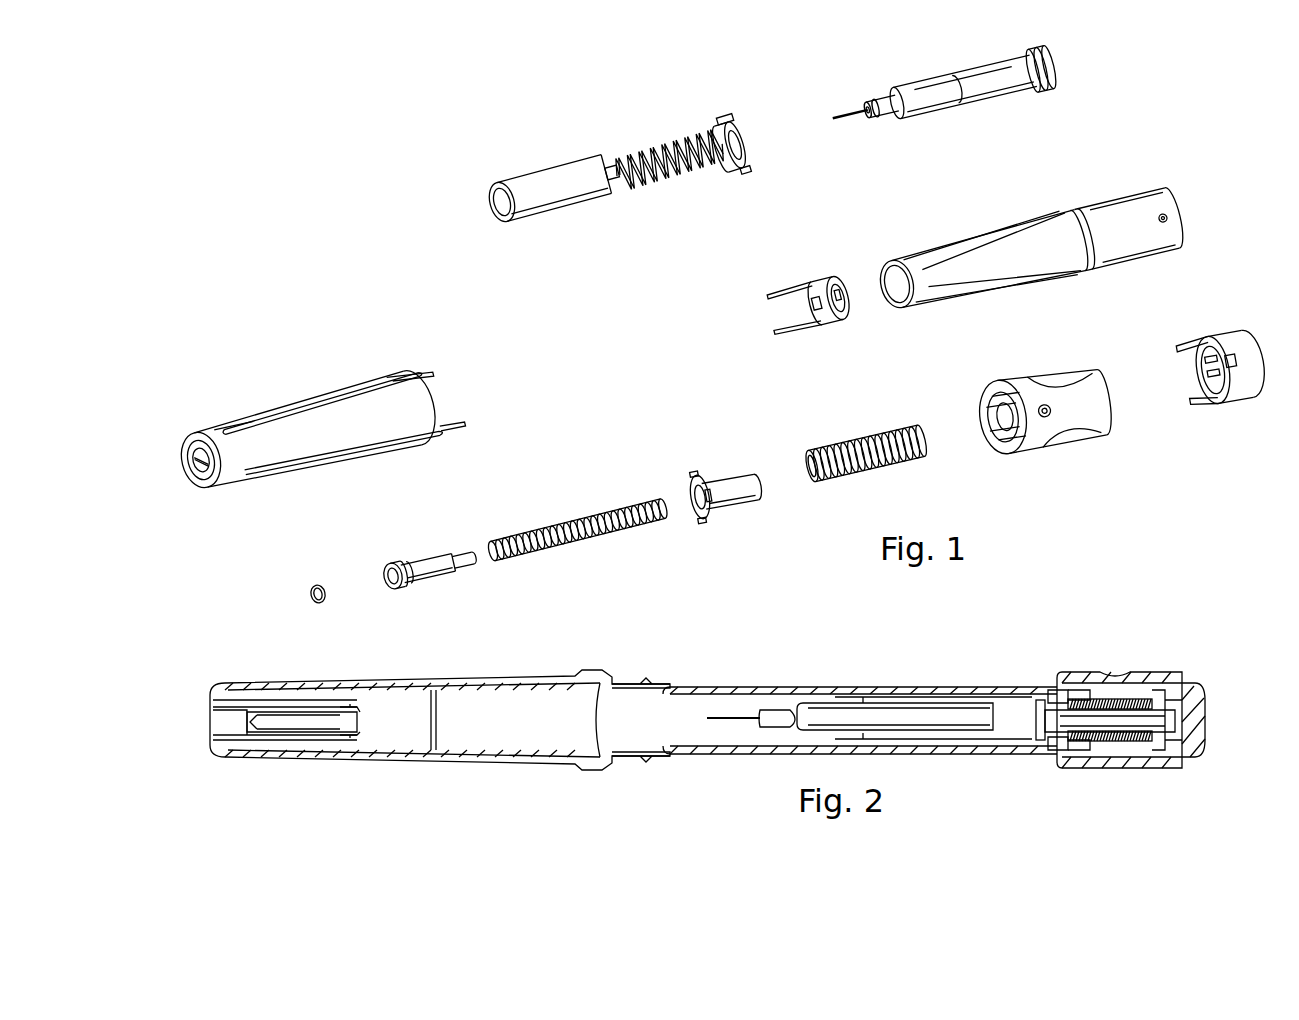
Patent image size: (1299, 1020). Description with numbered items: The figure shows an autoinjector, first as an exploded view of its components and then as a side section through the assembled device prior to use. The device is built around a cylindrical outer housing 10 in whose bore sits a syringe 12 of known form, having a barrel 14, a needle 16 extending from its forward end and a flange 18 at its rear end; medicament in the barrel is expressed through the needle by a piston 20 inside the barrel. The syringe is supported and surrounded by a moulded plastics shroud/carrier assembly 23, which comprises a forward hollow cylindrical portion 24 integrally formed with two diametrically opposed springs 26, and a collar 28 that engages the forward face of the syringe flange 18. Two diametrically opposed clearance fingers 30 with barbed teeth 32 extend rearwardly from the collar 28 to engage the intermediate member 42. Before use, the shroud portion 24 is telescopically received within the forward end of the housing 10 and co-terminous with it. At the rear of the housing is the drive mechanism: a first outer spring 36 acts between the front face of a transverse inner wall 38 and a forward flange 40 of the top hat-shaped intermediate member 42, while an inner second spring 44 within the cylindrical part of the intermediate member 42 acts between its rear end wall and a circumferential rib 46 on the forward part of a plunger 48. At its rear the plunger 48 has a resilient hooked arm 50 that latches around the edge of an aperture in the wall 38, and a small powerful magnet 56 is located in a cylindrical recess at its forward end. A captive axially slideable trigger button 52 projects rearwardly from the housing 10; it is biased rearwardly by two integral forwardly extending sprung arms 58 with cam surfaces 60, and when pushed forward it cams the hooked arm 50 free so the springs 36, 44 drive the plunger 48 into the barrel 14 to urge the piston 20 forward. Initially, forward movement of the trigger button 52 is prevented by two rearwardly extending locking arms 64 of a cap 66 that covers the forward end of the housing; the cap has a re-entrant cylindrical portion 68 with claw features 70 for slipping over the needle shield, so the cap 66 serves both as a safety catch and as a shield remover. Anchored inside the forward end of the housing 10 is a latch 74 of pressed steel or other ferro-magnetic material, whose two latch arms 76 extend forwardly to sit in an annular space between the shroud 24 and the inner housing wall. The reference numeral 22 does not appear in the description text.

In FIG. 1, the outer housing 10 is at (1052, 268).
In FIG. 2, the outer housing 10 is at (860, 720).
In FIG. 1, the syringe 12 is at (962, 92).
In FIG. 1, the barrel 14 is at (975, 85).
In FIG. 1, the needle 16 is at (853, 120).
In FIG. 1, the flange 18 is at (1058, 70).
In FIG. 1, the piston 20 is at (1018, 88).
In FIG. 2, the needle hub 22 is at (288, 712).
In FIG. 1, the shroud/carrier assembly 23 is at (630, 198).
In FIG. 1, the forward hollow cylindrical portion 24 is at (557, 196).
In FIG. 2, the forward hollow cylindrical portion 24 is at (760, 704).
In FIG. 1, the springs 26 is at (686, 148).
In FIG. 1, the collar 28 is at (752, 148).
In FIG. 1, the clearance fingers 30 is at (736, 115).
In FIG. 2, the clearance fingers 30 is at (1052, 692).
In FIG. 1, the barbed teeth 32 is at (752, 122).
In FIG. 2, the barbed teeth 32 is at (1075, 692).
In FIG. 1, the first outer spring 36 is at (882, 465).
In FIG. 2, the first outer spring 36 is at (1128, 700).
In FIG. 1, the transverse inner wall 38 is at (1045, 410).
In FIG. 2, the transverse inner wall 38 is at (1192, 690).
In FIG. 1, the forward flange 40 is at (695, 518).
In FIG. 2, the forward flange 40 is at (1052, 748).
In FIG. 1, the intermediate member 42 is at (740, 490).
In FIG. 2, the intermediate member 42 is at (1110, 721).
In FIG. 1, the second spring 44 is at (598, 535).
In FIG. 1, the circumferential rib 46 is at (405, 556).
In FIG. 1, the plunger 48 is at (432, 565).
In FIG. 1, the resilient hooked arm 50 is at (460, 548).
In FIG. 1, the trigger button 52 is at (1243, 380).
In FIG. 2, the trigger button 52 is at (1205, 718).
In FIG. 1, the magnet 56 is at (310, 600).
In FIG. 1, the sprung arms 58 is at (1195, 358).
In FIG. 1, the cam surfaces 60 is at (1185, 342).
In FIG. 1, the locking arms 64 is at (458, 362).
In FIG. 2, the locking arms 64 is at (632, 676).
In FIG. 1, the cap 66 is at (305, 450).
In FIG. 2, the cap 66 is at (408, 758).
In FIG. 1, the re-entrant cylindrical portion 68 is at (188, 450).
In FIG. 2, the re-entrant cylindrical portion 68 is at (280, 742).
In FIG. 2, the claw features 70 is at (352, 742).
In FIG. 1, the latch 74 is at (838, 328).
In FIG. 1, the latch arms 76 is at (772, 300).